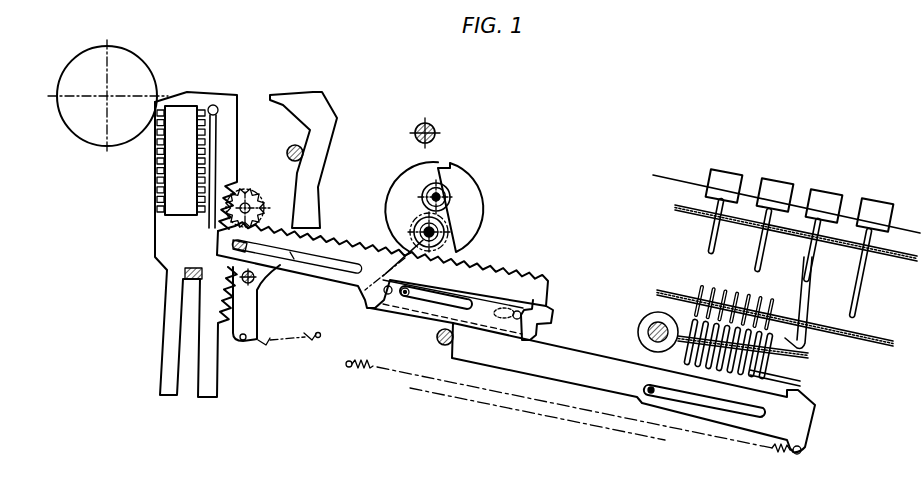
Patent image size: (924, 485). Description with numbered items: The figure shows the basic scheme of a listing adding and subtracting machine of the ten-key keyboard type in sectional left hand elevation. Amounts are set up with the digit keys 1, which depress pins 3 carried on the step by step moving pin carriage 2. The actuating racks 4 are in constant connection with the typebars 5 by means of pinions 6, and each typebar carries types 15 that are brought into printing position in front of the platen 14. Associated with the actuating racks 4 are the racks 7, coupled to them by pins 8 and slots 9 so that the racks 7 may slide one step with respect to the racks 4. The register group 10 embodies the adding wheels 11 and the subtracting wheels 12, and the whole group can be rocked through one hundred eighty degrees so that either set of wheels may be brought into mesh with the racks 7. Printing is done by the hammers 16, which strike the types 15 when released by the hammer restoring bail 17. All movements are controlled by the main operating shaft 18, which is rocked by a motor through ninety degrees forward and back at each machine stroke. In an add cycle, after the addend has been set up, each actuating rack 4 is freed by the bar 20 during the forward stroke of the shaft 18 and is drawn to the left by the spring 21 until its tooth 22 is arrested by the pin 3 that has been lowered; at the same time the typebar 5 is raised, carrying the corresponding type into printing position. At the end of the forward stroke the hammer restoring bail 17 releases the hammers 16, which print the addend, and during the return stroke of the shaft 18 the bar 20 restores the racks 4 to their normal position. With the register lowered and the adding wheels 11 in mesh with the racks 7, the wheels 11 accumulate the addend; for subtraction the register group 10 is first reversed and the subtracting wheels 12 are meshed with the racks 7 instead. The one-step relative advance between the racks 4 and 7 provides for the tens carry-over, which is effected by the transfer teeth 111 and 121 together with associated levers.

The digit keys 1 is at (777, 192).
The pin carriage 2 is at (650, 322).
The pins 3 is at (768, 366).
The actuating racks 4 is at (580, 370).
The typebars 5 is at (166, 234).
The pinions 6 is at (257, 203).
The racks 7 is at (530, 285).
The pins 8 is at (537, 327).
The slots 9 is at (527, 313).
The register group 10 is at (471, 213).
The adding wheels 11 is at (446, 233).
The subtracting wheels 12 is at (425, 191).
The platen 14 is at (128, 67).
The types 15 is at (163, 157).
The hammers 16 is at (323, 106).
The hammer restoring bail 17 is at (291, 145).
The main operating shaft 18 is at (437, 125).
The bar 20 is at (439, 341).
The spring 21 is at (428, 381).
The tooth 22 is at (793, 395).
The transfer teeth 111 is at (420, 241).
The transfer teeth 121 is at (452, 190).